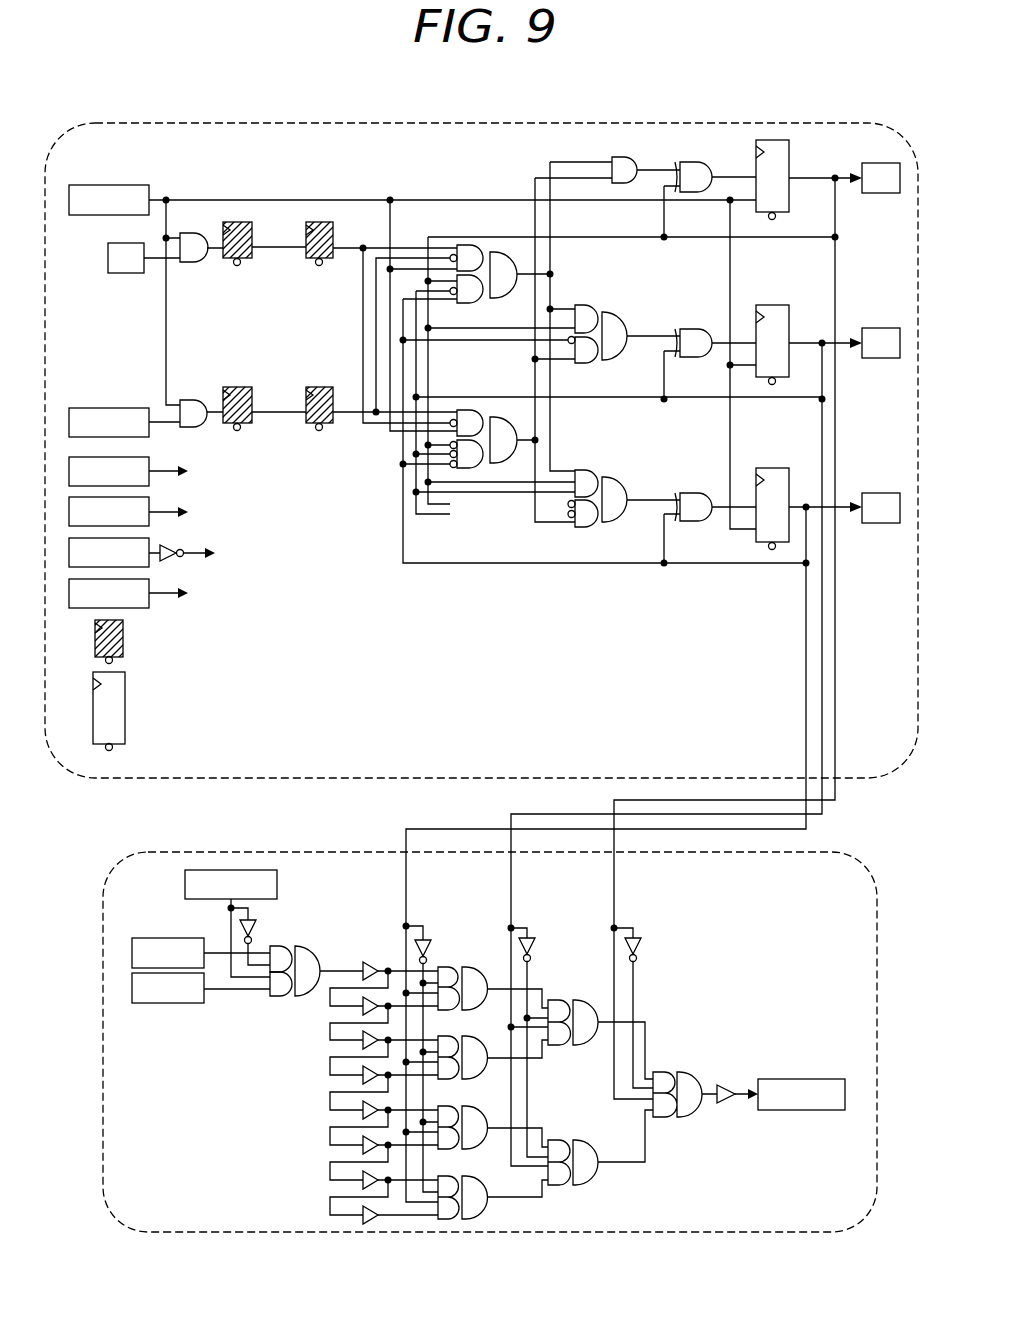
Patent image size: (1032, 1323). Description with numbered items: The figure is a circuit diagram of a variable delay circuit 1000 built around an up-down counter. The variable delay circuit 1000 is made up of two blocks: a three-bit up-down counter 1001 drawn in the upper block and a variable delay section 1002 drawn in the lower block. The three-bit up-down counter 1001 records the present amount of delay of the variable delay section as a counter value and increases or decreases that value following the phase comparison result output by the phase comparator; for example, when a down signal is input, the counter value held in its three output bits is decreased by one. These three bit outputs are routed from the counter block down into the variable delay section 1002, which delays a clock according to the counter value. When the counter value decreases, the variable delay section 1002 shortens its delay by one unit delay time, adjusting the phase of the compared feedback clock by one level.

The variable delay circuit 1000 is at (502, 88).
The 3-bit up-down counter 1001 is at (137, 123).
The variable delay section 1002 is at (179, 852).